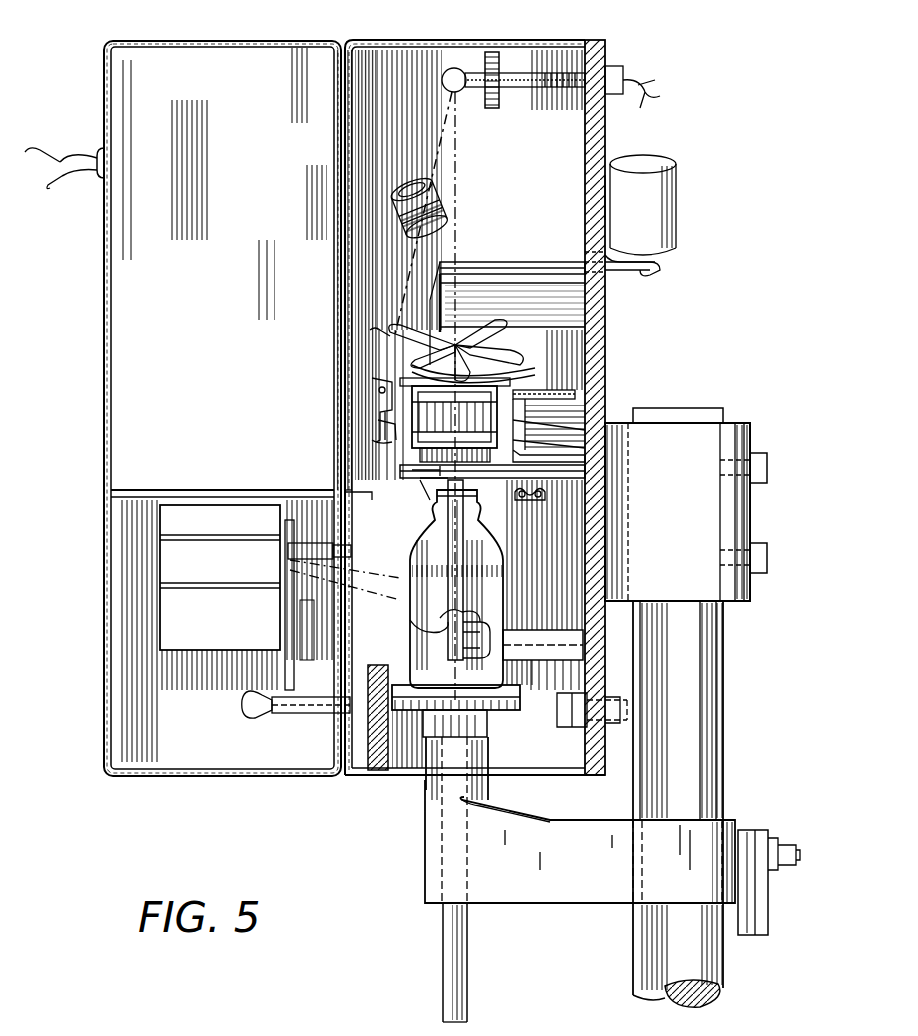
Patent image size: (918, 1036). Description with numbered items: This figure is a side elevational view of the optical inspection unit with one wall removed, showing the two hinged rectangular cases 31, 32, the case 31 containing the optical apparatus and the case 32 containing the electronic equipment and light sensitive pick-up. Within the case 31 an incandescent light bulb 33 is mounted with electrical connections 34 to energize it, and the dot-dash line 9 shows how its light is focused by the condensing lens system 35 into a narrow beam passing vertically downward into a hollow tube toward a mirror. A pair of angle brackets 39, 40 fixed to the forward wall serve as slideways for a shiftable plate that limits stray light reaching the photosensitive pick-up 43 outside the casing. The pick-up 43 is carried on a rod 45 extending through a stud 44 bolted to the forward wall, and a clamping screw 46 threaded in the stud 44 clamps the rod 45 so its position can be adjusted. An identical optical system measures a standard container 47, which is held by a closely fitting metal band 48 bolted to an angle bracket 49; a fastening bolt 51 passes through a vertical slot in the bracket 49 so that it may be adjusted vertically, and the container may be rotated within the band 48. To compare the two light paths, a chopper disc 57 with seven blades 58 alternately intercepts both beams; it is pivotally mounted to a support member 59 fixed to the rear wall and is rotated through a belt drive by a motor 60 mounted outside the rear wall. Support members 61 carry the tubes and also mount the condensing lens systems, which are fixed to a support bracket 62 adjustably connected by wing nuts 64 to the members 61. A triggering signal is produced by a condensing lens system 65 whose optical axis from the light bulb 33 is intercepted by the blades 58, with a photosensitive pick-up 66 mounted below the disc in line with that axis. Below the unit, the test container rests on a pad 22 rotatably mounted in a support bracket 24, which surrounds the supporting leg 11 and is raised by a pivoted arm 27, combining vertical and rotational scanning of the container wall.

The dot-dash line 9 is at (458, 184).
The supporting leg 11 is at (682, 775).
The pad 22 is at (500, 712).
The support bracket 24 is at (586, 877).
The pivoted arm 27 is at (770, 920).
The case 31 is at (541, 40).
The case 32 is at (272, 60).
The incandescent light bulb 33 is at (447, 68).
The electrical connections 34 is at (630, 82).
The condensing lens system 35 is at (412, 434).
The angle bracket 39 is at (380, 615).
The angle bracket 40 is at (378, 662).
The photosensitive pick-up 43 is at (196, 645).
The stud 44 is at (318, 718).
The rod 45 is at (288, 720).
The clamping screw 46 is at (250, 712).
The standard container 47 is at (420, 560).
The metal band 48 is at (488, 628).
The angle bracket 49 is at (543, 660).
The fastening bolt 51 is at (623, 698).
The chopper disc 57 is at (418, 324).
The blades 58 is at (385, 342).
The support member 59 is at (513, 313).
The motor 60 is at (660, 214).
The support members 61 is at (578, 434).
The support bracket 62 is at (580, 398).
The wing nuts 64 is at (540, 502).
The condensing lens system 65 is at (398, 200).
The photosensitive pick-up 66 is at (375, 386).
The spray container S is at (498, 530).